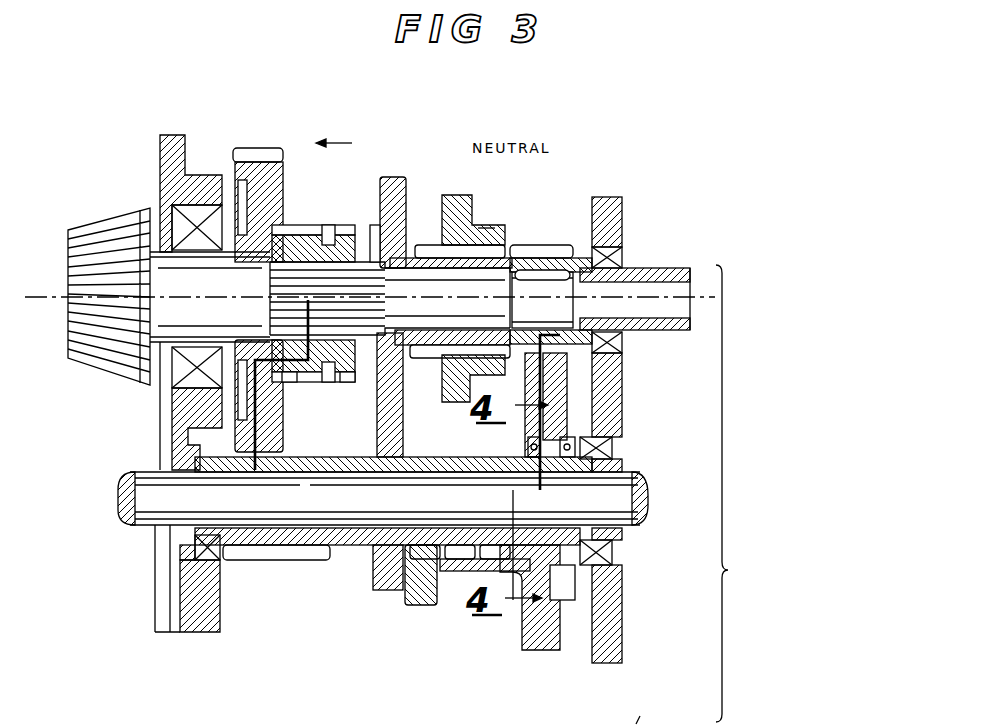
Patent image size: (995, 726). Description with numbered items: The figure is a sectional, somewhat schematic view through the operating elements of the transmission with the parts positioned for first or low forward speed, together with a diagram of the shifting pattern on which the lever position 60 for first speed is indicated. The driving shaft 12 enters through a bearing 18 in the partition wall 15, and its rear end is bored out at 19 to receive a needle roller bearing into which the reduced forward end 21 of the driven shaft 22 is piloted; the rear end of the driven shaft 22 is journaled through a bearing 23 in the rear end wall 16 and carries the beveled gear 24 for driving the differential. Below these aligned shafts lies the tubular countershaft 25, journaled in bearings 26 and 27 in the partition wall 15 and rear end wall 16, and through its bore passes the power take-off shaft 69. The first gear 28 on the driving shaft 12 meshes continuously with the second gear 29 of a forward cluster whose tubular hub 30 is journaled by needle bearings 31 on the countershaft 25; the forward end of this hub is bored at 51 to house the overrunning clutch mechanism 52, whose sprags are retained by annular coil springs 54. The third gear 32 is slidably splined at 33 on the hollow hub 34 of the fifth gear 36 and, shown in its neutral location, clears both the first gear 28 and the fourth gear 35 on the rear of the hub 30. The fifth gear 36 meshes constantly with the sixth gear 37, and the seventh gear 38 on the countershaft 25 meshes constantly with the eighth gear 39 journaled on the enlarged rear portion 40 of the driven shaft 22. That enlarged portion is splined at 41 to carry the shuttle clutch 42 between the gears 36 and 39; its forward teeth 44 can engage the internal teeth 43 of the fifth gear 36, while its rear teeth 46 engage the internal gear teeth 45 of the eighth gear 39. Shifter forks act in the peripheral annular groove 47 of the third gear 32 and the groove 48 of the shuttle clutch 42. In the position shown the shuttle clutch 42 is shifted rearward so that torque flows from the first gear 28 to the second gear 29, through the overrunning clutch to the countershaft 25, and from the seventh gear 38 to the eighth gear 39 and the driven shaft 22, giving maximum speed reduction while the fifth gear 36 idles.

The driving shaft 12 is at (675, 270).
The partition wall 15 is at (622, 630).
The rear end wall 16 is at (200, 630).
The bearing 18 is at (622, 258).
The bore 19 is at (528, 262).
The reduced forward end 21 is at (545, 309).
The driven shaft 22 is at (470, 300).
The bearing 23 is at (165, 372).
The beveled gear 24 is at (100, 378).
The countershaft 25 is at (356, 550).
The bearing 26 is at (614, 556).
The bearing 27 is at (192, 545).
The first gear 28 is at (553, 245).
The second gear 29 is at (560, 398).
The tubular hub 30 is at (472, 575).
The needle bearings 31 is at (462, 565).
The third gear 32 is at (470, 212).
The splines 33 is at (418, 244).
The hollow hub 34 is at (437, 352).
The fourth gear 35 is at (412, 605).
The fifth gear 36 is at (400, 190).
The sixth gear 37 is at (382, 575).
The seventh gear 38 is at (280, 553).
The eighth gear 39 is at (283, 196).
The enlarged rear portion 40 is at (222, 299).
The splines 41 is at (262, 318).
The shuttle clutch 42 is at (318, 230).
The internal teeth 43 is at (375, 382).
The teeth 44 is at (338, 383).
The internal gear teeth 45 is at (268, 150).
The teeth 46 is at (290, 378).
The peripheral annular groove 47 is at (485, 226).
The groove 48 is at (332, 237).
The bore 51 is at (590, 440).
The overrunning clutch mechanism 52 is at (614, 452).
The annular coil springs 54 is at (558, 585).
The first forward speed position 60 is at (652, 711).
The power take-off shaft 69 is at (648, 493).